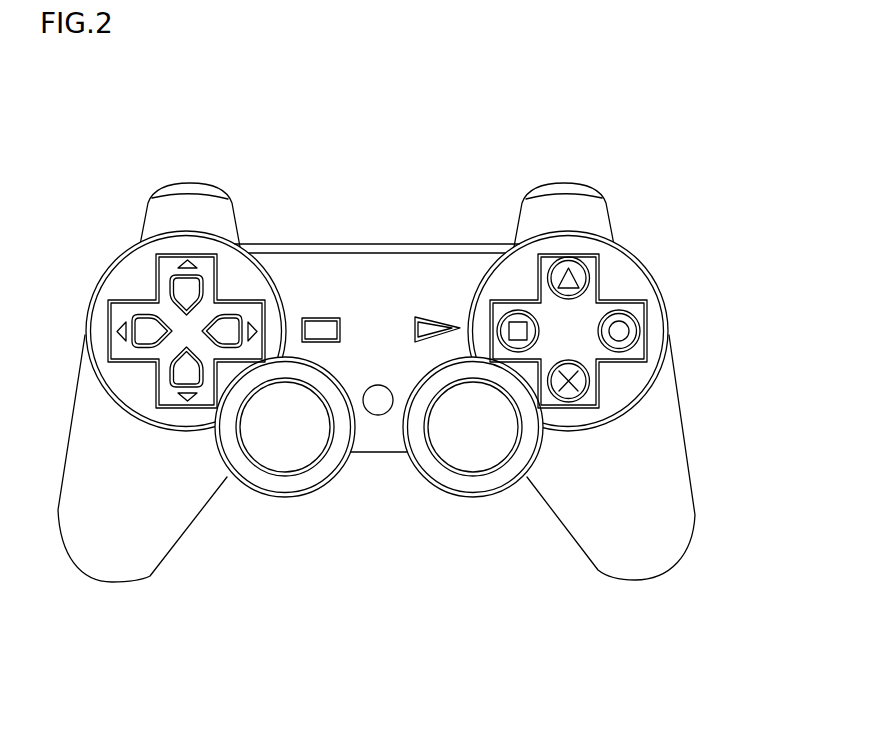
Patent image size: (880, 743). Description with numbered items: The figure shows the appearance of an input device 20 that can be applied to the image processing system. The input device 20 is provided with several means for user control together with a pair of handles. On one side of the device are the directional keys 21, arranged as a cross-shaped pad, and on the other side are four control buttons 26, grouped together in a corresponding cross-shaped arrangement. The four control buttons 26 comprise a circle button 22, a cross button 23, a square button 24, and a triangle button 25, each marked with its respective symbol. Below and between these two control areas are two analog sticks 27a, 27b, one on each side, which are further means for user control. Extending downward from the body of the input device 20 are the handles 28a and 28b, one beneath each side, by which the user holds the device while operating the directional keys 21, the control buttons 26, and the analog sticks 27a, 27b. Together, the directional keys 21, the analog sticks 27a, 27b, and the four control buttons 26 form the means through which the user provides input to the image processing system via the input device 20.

The input device 20 is at (736, 100).
The directional keys 21 is at (127, 312).
The circle button 22 is at (623, 322).
The cross button 23 is at (582, 378).
The square button 24 is at (533, 330).
The triangle button 25 is at (580, 277).
The control buttons 26 is at (767, 227).
The analog stick 27a is at (297, 450).
The analog stick 27b is at (480, 450).
The handle 28a is at (120, 552).
The handle 28b is at (643, 545).